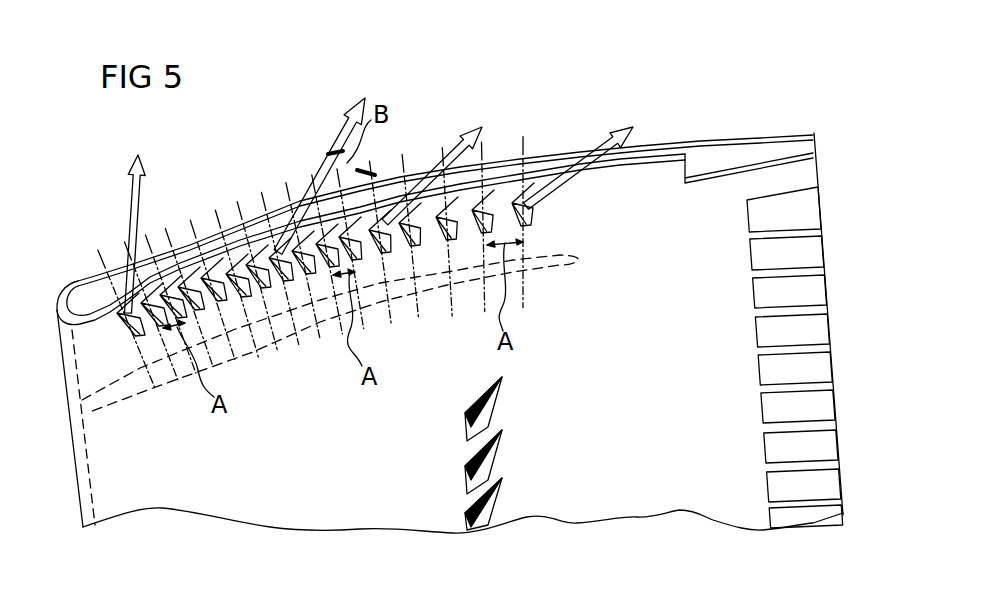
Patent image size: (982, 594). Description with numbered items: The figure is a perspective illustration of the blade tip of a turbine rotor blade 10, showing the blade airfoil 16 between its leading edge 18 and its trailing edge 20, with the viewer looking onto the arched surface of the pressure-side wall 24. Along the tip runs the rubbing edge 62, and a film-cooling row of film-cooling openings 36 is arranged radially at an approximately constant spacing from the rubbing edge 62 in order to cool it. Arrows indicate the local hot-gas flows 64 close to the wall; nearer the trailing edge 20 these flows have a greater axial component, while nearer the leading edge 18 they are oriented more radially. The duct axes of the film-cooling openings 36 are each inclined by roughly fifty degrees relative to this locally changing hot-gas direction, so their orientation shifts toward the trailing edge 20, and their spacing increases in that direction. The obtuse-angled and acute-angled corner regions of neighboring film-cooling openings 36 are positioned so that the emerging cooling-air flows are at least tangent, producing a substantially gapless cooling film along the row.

The turbine rotor blade 10 is at (738, 110).
The blade airfoil 16 is at (379, 334).
The leading edge 18 is at (69, 418).
The trailing edge 20 is at (820, 208).
The pressure-side wall 24 is at (676, 409).
The film-cooling openings 36 is at (500, 214).
The rubbing edge 62 is at (657, 158).
The hot-gas flows 64 is at (128, 197).